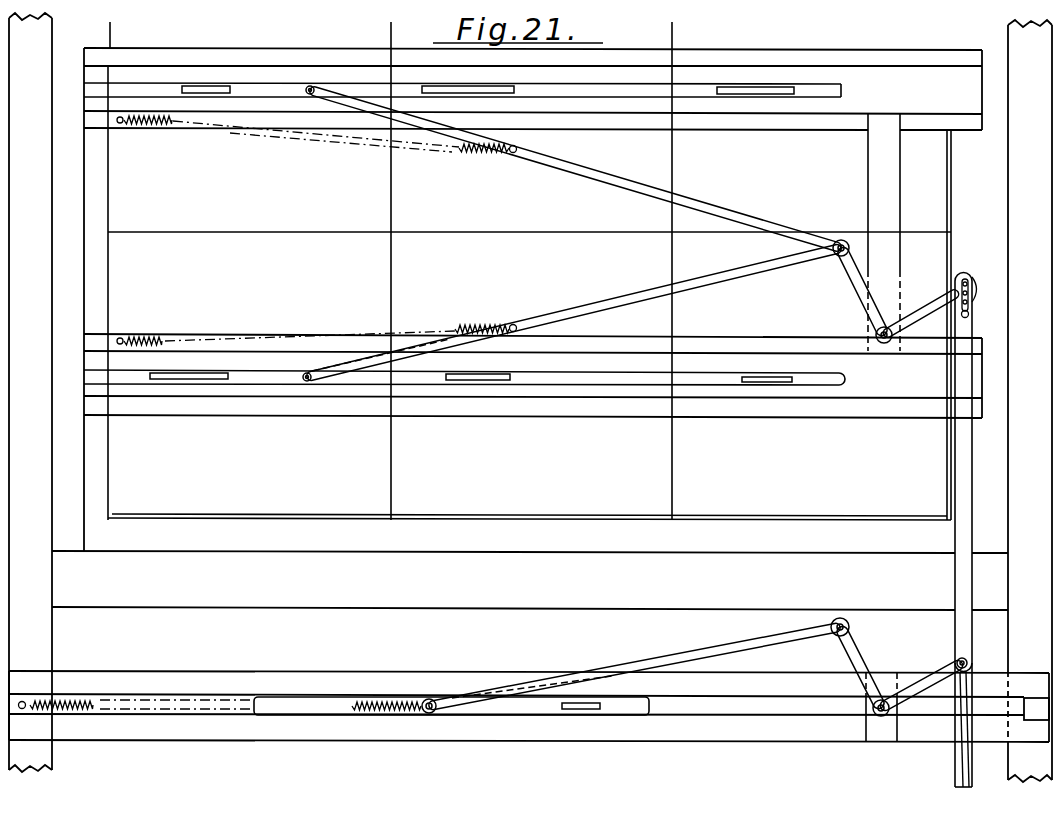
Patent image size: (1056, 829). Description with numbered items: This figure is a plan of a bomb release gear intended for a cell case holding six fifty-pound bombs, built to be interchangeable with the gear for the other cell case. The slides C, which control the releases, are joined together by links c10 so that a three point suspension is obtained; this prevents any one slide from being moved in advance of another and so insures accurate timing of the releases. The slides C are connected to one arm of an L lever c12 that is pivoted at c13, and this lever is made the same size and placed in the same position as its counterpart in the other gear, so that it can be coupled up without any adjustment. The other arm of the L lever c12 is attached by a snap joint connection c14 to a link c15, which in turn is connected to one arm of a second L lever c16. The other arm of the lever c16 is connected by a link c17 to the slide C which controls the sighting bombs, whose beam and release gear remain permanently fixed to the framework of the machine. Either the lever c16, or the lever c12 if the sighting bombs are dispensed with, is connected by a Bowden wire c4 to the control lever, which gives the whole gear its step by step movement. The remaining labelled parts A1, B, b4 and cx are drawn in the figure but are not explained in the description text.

The window sash A1 is at (529, 382).
The slots B is at (205, 84).
The sash rails b4 is at (322, 58).
The slide C is at (702, 83).
The springs cx is at (78, 698).
The link c10 is at (550, 318).
The L lever c12 is at (850, 279).
The pivot c13 is at (876, 333).
The snap joint connection c14 is at (973, 299).
The link c15 is at (958, 496).
The L lever c16 is at (931, 668).
The link c17 is at (680, 655).
The Bowden wire c4 is at (968, 769).